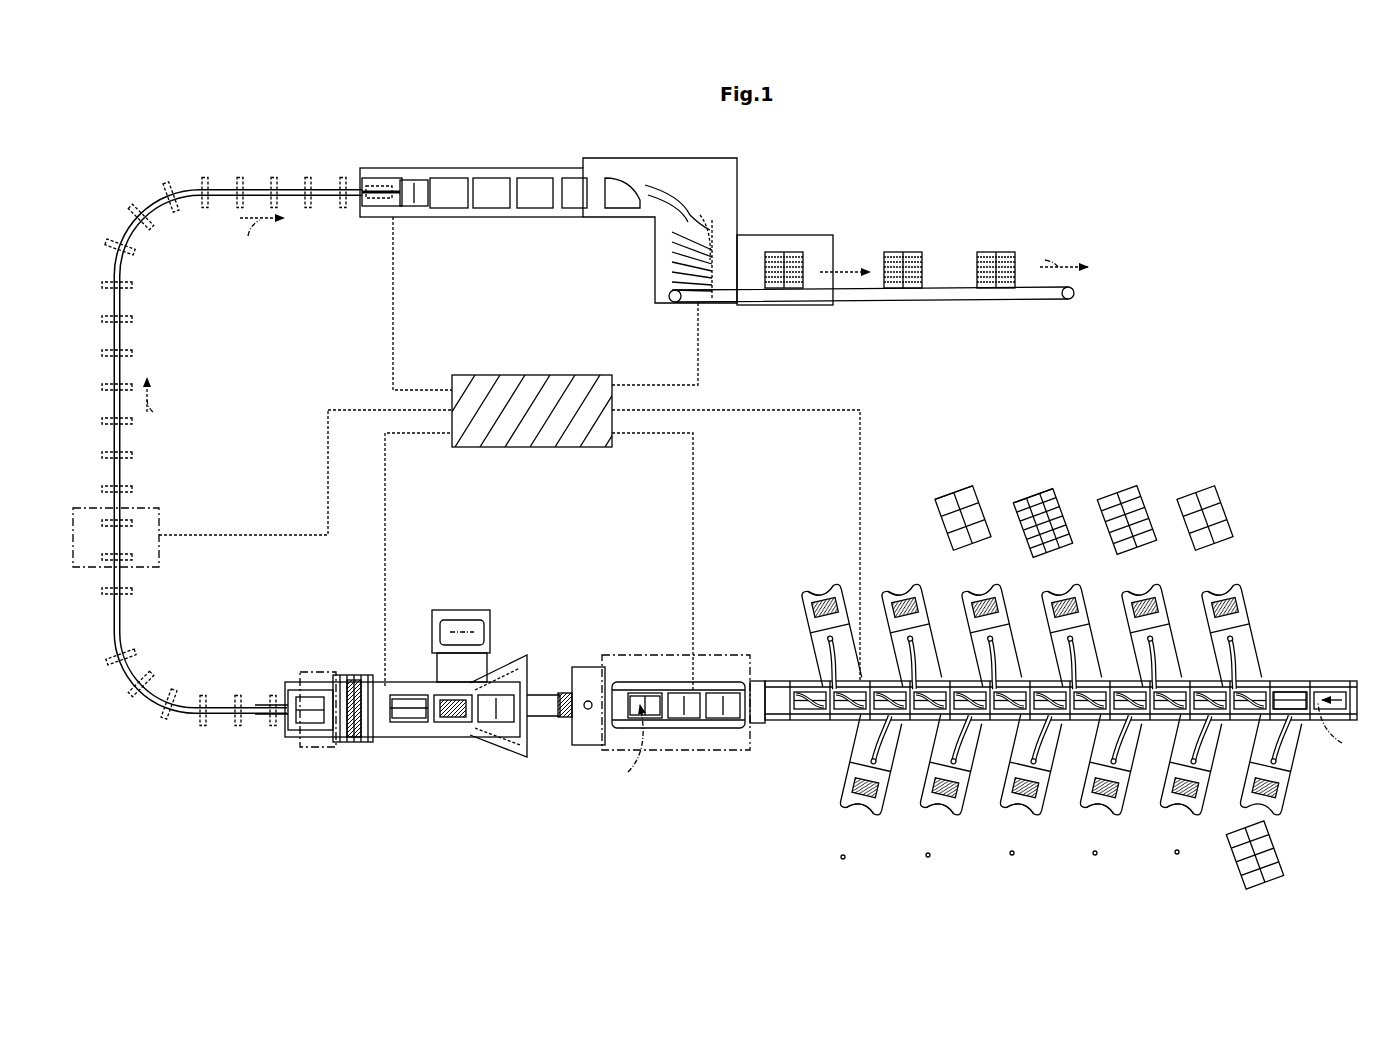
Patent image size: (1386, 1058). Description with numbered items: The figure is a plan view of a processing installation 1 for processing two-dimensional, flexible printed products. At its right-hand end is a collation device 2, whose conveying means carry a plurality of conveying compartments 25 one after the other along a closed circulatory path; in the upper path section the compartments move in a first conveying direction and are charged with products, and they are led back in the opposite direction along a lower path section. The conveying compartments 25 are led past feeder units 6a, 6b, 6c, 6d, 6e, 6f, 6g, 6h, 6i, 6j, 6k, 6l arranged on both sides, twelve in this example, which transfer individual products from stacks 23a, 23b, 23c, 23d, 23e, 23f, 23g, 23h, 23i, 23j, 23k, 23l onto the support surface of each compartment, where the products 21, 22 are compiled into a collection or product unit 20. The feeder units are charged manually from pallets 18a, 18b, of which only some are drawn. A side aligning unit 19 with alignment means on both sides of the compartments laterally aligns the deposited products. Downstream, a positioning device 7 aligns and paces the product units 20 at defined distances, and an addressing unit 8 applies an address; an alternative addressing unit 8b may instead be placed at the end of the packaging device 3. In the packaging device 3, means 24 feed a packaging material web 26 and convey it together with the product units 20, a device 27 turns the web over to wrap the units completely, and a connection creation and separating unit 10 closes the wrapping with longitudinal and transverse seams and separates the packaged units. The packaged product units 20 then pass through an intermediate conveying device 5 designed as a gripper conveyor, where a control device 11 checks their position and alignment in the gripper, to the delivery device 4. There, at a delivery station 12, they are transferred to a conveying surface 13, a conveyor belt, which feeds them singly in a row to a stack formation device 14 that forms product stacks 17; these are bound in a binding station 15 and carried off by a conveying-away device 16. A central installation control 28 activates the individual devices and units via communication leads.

The processing installation 1 is at (1088, 372).
The collation device 2 is at (1056, 689).
The packaging device 3 is at (409, 692).
The delivery device 4 is at (473, 189).
The intermediate conveying device 5 is at (128, 437).
The feeder unit 6a is at (820, 583).
The feeder unit 6b is at (900, 582).
The feeder unit 6c is at (982, 582).
The feeder unit 6d is at (1062, 582).
The feeder unit 6e is at (1142, 582).
The feeder unit 6f is at (1222, 582).
The feeder unit 6g is at (865, 818).
The feeder unit 6h is at (945, 818).
The feeder unit 6i is at (1025, 818).
The feeder unit 6j is at (1105, 818).
The feeder unit 6k is at (1185, 818).
The feeder unit 6l is at (1270, 856).
The positioning device 7 is at (636, 680).
The addressing unit 8 is at (590, 665).
The addressing unit 8b is at (318, 672).
The connection creation and separating unit 10 is at (350, 745).
The control device 11 is at (157, 516).
The delivery station 12 is at (368, 178).
The conveying surface 13 is at (432, 176).
The stack formation device 14 is at (655, 250).
The binding station 15 is at (810, 236).
The conveying-away device 16 is at (930, 300).
The product stack 17 is at (790, 254).
The pallet 18a is at (960, 490).
The pallet 18b is at (1042, 492).
The side aligning unit 19 is at (800, 722).
The product unit 20 is at (272, 722).
The product 21 is at (947, 506).
The product 22 is at (1033, 508).
The stack 23a is at (815, 595).
The stack 23b is at (900, 592).
The stack 23c is at (975, 595).
The stack 23d is at (1055, 595).
The stack 23e is at (1135, 595).
The stack 23f is at (1232, 590).
The stack 23g is at (855, 815).
The stack 23h is at (935, 815).
The feeding arm 23i is at (1015, 815).
The feeding arm 23j is at (1095, 815).
The feeding arm 23k is at (1175, 815).
The feeding arm 23l is at (1286, 800).
The means for feeding a packaging material web 24 is at (455, 608).
The conveying compartment 25 is at (1250, 690).
The packaging material web 26 is at (503, 702).
The device for turning over the packaging material web 27 is at (526, 655).
The central installation control 28 is at (505, 375).